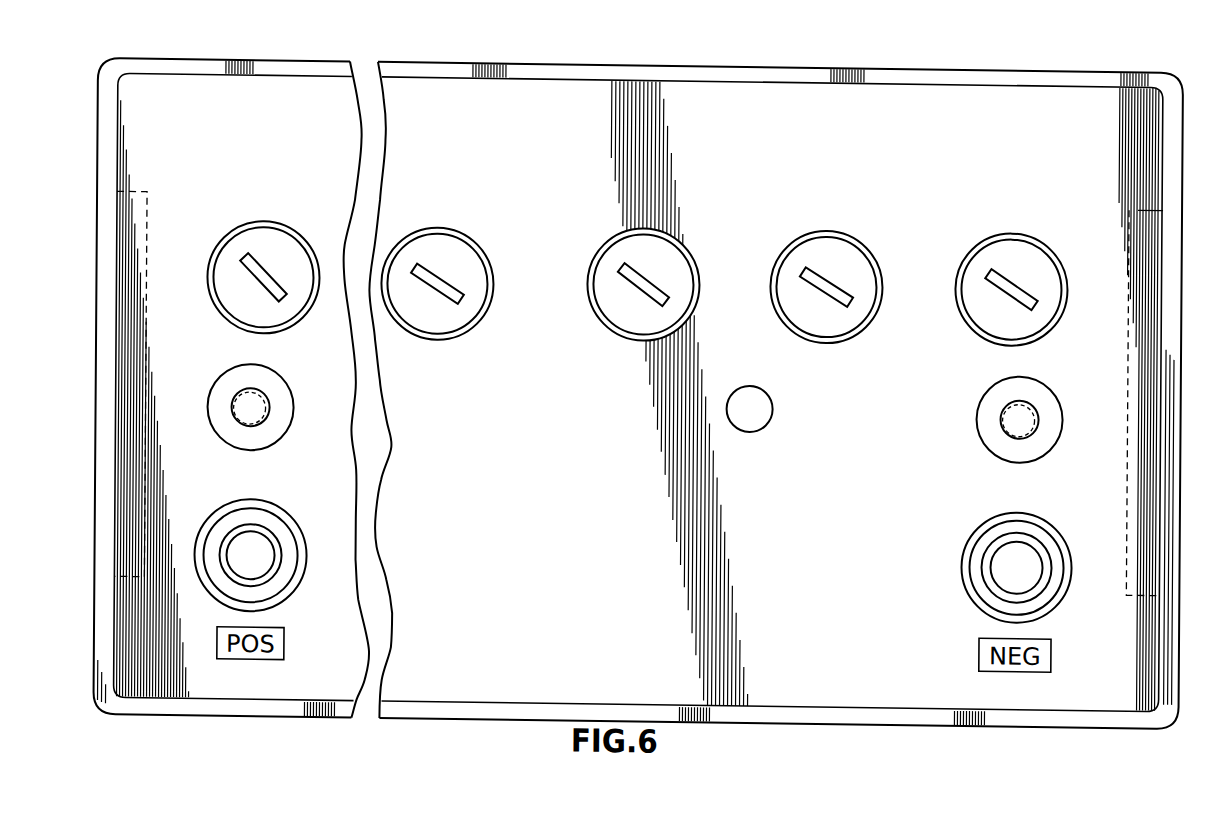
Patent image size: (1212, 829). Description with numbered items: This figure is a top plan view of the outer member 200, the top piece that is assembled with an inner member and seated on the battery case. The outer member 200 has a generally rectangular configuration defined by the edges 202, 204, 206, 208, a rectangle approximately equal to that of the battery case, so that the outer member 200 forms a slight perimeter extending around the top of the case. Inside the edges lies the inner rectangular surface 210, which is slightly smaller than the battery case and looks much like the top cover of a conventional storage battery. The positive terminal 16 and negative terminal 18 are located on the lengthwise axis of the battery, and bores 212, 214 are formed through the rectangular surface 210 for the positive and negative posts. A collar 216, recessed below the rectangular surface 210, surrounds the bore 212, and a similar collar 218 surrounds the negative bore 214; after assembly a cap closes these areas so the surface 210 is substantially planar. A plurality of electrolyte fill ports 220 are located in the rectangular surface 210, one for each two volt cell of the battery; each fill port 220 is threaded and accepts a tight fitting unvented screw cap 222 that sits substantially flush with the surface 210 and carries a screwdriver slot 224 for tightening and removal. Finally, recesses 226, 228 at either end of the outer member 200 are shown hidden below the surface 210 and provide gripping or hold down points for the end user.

The outer member 200 is at (763, 55).
The edge 202 is at (1181, 182).
The edge 204 is at (893, 707).
The edge 206 is at (97, 413).
The edge 208 is at (570, 57).
The inner rectangular surface 210 is at (919, 190).
The bore 212 is at (239, 562).
The bore 214 is at (1002, 564).
The recess collar 216 is at (292, 545).
The collar 218 is at (1030, 517).
The electrolyte fill port 220 is at (239, 204).
The screw cap 222 is at (288, 252).
The screwdriver slot 224 is at (278, 290).
The recess 226 is at (151, 341).
The recess 228 is at (1132, 306).
The positive terminal 16 is at (256, 408).
The negative terminal 18 is at (1015, 405).